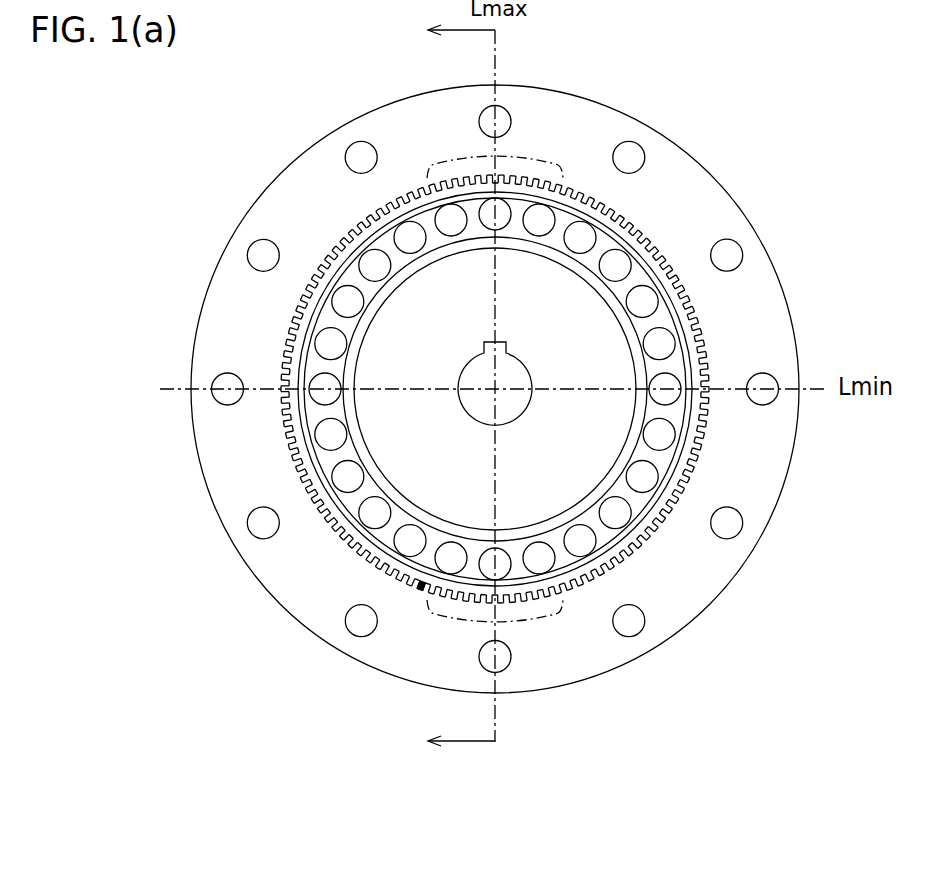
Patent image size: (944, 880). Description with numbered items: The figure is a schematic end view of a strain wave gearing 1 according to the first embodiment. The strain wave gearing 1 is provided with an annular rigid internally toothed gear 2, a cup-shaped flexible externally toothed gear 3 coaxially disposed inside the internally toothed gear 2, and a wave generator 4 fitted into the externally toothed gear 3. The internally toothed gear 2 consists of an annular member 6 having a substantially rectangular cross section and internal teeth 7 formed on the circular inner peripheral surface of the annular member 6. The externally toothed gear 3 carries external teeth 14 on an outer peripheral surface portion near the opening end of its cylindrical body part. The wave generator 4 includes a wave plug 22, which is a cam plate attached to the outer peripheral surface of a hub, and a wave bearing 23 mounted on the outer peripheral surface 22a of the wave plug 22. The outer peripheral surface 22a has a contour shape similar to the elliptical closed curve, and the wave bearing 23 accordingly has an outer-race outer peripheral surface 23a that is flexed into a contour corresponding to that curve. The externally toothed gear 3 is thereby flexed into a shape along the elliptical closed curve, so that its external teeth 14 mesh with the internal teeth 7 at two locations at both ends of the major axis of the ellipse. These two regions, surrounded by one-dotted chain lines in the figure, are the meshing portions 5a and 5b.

The strain wave gearing 1 is at (667, 88).
The rigid internally toothed gear 2 is at (685, 248).
The flexible externally toothed gear 3 is at (693, 313).
The wave generator 4 is at (490, 500).
The meshing portion 5a is at (465, 152).
The meshing portion 5b is at (522, 625).
The annular member 6 is at (588, 96).
The internal teeth 7 is at (633, 237).
The external teeth 14 is at (662, 253).
The wave plug 22 is at (378, 557).
The outer peripheral surface of the wave plug 22a is at (432, 502).
The wave bearing 23 is at (400, 583).
The outer-race outer peripheral surface 23a is at (420, 598).